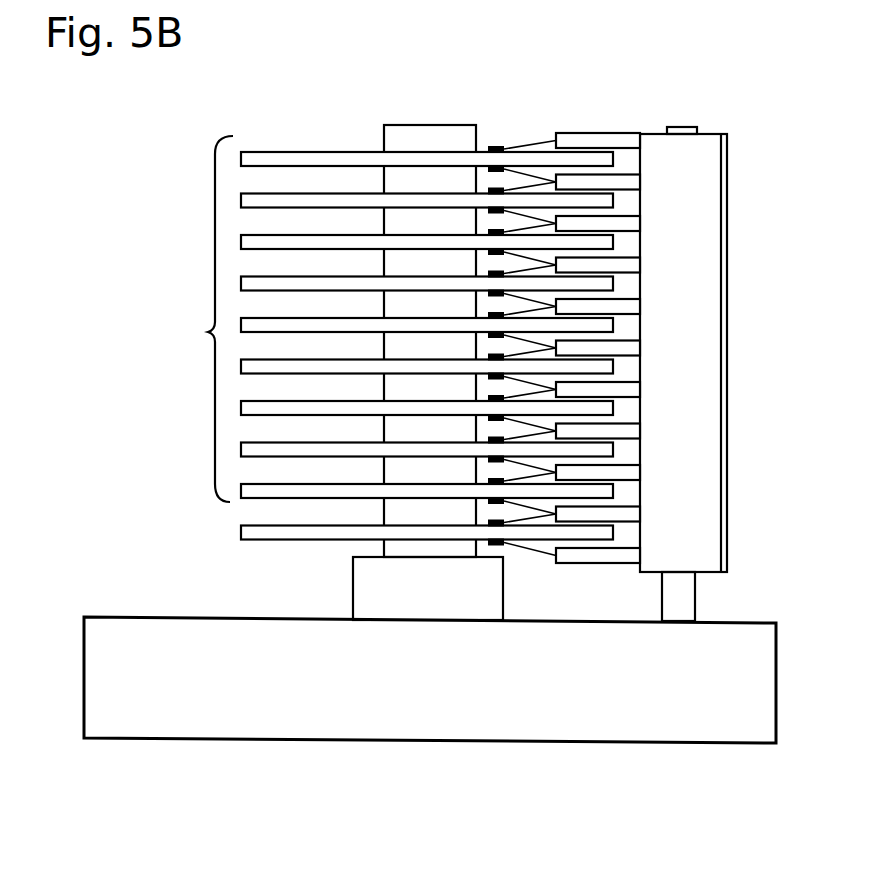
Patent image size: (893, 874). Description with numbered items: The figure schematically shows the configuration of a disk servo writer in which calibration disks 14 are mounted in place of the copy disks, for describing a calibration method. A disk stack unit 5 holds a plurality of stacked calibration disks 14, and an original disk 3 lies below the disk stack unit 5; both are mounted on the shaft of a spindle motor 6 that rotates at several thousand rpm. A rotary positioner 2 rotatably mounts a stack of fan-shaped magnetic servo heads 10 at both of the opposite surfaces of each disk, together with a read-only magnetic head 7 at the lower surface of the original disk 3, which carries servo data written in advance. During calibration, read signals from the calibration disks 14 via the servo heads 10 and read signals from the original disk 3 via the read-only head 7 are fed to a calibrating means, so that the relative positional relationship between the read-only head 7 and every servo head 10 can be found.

The rotary positioner 2 is at (652, 133).
The original disk 3 is at (243, 533).
The disk stack unit 5 is at (311, 137).
The spindle motor 6 is at (368, 590).
The read-only magnetic head 7 is at (550, 554).
The magnetic servo heads 10 is at (536, 142).
The calibration disks 14 is at (391, 319).